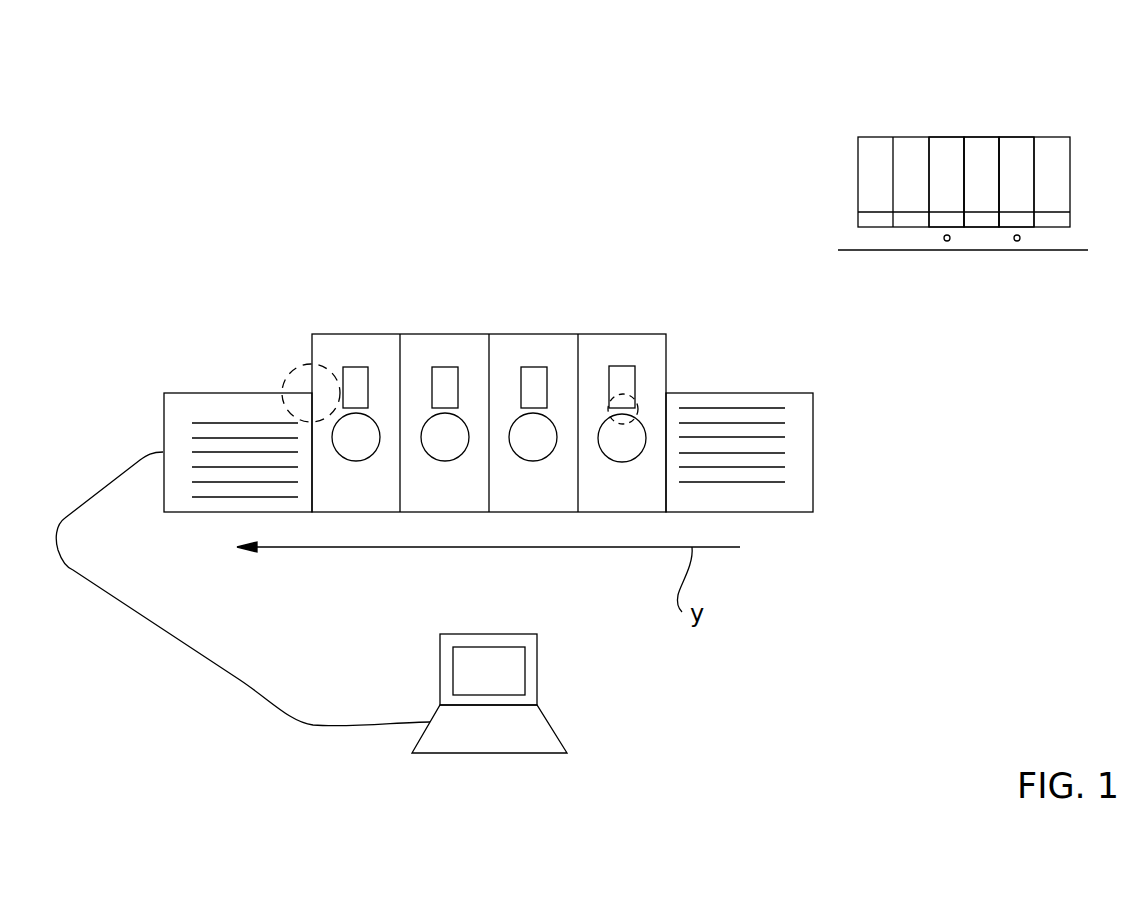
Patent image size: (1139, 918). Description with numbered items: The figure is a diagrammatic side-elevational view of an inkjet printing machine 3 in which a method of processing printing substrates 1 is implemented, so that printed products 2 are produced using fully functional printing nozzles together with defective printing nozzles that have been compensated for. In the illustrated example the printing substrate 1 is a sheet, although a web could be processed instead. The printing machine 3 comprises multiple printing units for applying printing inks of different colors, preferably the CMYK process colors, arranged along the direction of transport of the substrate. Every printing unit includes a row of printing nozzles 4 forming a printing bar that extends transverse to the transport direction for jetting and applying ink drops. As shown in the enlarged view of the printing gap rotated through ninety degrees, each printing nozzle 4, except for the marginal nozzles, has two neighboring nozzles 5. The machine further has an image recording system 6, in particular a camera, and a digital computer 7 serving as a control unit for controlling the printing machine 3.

The printing substrate 1 is at (813, 450).
The printed product 2 is at (185, 392).
The printing machine 3 is at (452, 333).
The printing nozzle 4 is at (358, 377).
The neighboring nozzle 5 is at (943, 137).
The image recording system 6 is at (302, 365).
The digital computer 7 is at (488, 757).